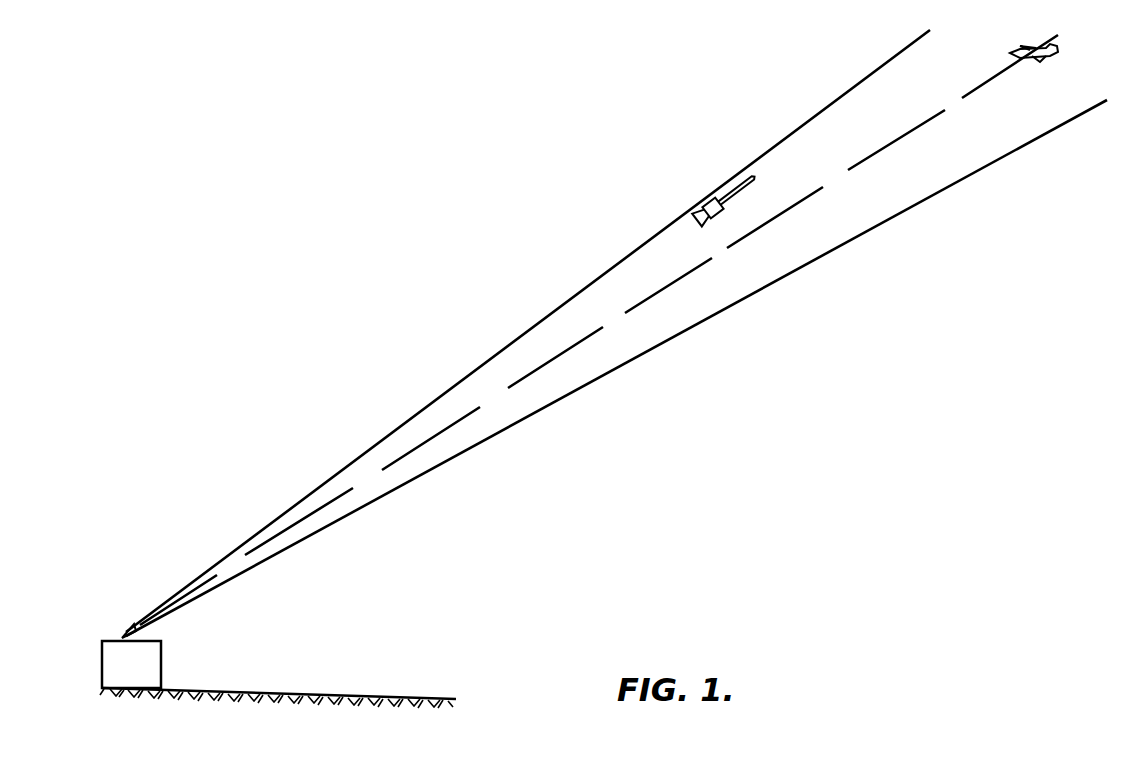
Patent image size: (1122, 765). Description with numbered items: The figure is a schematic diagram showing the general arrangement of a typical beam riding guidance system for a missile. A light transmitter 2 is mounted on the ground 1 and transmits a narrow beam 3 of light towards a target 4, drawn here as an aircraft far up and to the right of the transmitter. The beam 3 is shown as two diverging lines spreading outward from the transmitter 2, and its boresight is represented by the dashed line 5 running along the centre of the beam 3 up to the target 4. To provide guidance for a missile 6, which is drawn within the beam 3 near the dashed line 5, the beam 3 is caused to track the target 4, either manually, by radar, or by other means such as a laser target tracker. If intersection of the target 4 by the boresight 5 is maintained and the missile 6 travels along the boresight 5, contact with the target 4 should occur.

The ground 1 is at (330, 692).
The light transmitter 2 is at (113, 664).
The beam 3 is at (422, 422).
The target 4 is at (1053, 58).
The boresight 5 is at (537, 372).
The missile 6 is at (707, 200).